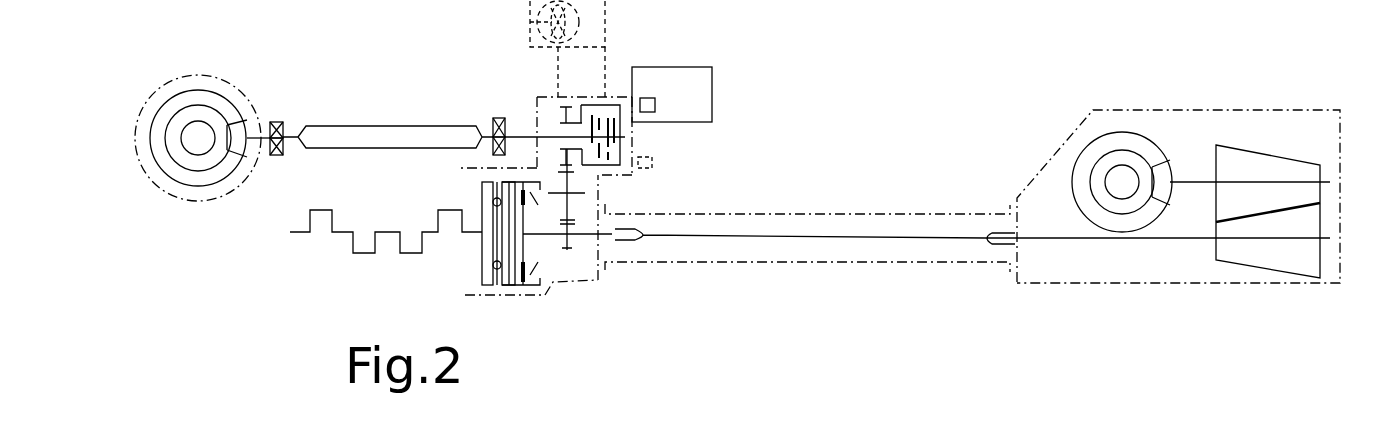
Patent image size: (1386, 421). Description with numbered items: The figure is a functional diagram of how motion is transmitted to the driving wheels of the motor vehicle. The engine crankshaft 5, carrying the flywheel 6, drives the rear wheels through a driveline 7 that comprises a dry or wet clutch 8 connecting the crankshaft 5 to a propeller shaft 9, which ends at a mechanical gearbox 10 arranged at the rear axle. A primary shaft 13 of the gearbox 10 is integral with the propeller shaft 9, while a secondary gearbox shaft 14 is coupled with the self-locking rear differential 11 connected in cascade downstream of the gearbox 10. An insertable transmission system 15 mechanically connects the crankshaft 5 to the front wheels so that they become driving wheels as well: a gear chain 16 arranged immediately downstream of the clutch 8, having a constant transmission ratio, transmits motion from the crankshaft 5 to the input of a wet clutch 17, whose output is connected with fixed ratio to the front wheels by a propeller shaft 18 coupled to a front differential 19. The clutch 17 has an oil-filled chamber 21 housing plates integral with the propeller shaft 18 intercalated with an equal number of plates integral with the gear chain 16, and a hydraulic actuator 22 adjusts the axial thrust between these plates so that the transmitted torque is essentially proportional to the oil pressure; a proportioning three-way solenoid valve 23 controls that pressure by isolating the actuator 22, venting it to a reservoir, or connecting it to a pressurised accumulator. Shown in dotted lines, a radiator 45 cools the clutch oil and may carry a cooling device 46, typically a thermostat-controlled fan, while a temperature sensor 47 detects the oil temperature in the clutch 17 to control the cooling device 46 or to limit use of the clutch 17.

The crankshaft 5 is at (407, 255).
The flywheel 6 is at (483, 270).
The driveline 7 is at (640, 283).
The clutch 8 is at (548, 290).
The propeller shaft 9 is at (817, 240).
The mechanical gearbox 10 is at (1240, 305).
The self-locking rear differential 11 is at (1118, 152).
The primary shaft 13 is at (1287, 243).
The secondary gearbox shaft 14 is at (1254, 180).
The insertable transmission system 15 is at (712, 147).
The gear chain 16 is at (590, 188).
The wet clutch 17 is at (605, 85).
The propeller shaft 18 is at (398, 133).
The front differential 19 is at (201, 112).
The chamber 21 is at (590, 110).
The hydraulic actuator 22 is at (675, 67).
The proportioning three-way solenoid valve 23 is at (656, 104).
The radiator 45 is at (598, 22).
The cooling device 46 is at (530, 22).
The temperature sensor 47 is at (652, 163).